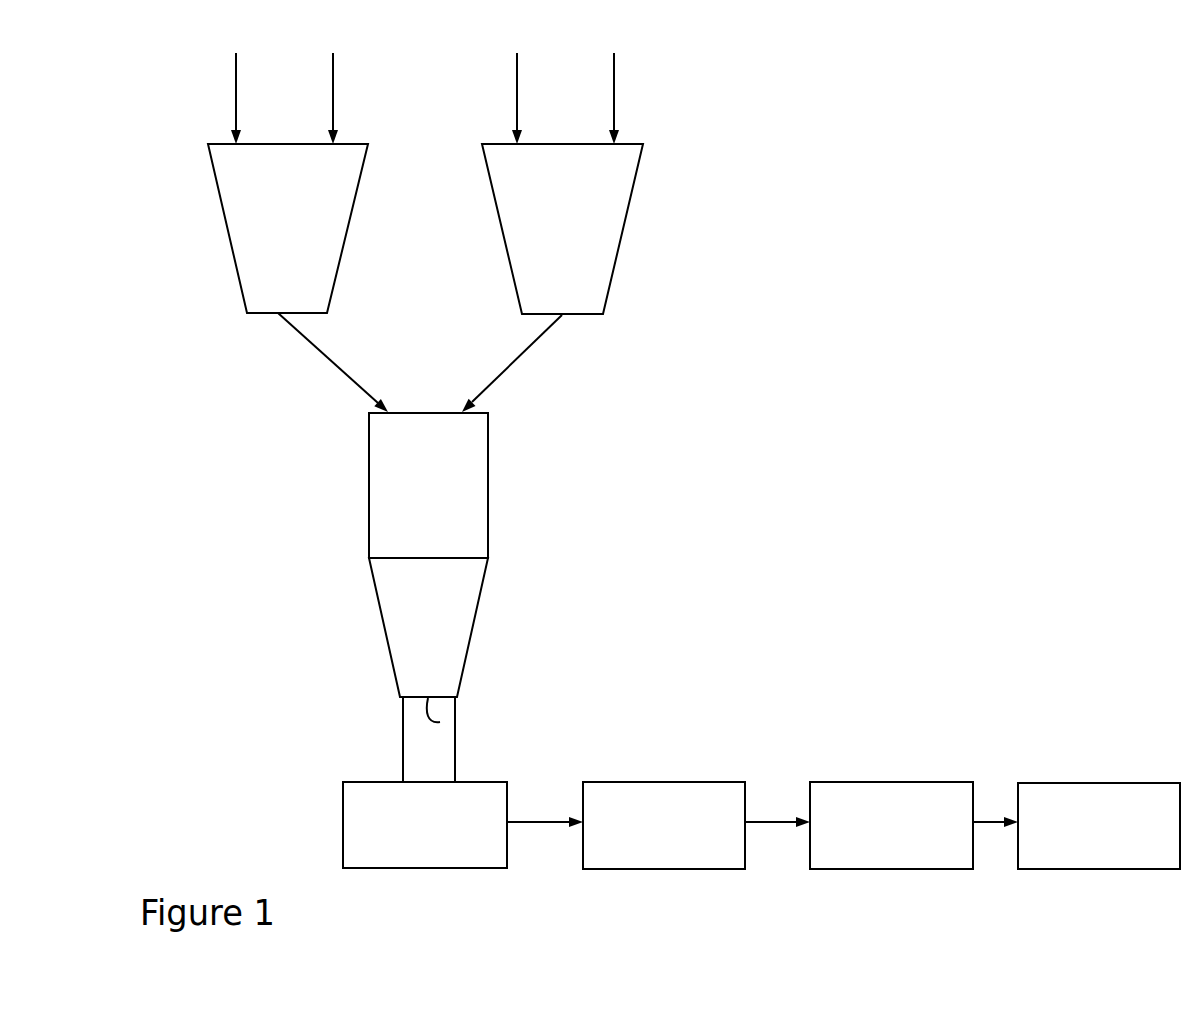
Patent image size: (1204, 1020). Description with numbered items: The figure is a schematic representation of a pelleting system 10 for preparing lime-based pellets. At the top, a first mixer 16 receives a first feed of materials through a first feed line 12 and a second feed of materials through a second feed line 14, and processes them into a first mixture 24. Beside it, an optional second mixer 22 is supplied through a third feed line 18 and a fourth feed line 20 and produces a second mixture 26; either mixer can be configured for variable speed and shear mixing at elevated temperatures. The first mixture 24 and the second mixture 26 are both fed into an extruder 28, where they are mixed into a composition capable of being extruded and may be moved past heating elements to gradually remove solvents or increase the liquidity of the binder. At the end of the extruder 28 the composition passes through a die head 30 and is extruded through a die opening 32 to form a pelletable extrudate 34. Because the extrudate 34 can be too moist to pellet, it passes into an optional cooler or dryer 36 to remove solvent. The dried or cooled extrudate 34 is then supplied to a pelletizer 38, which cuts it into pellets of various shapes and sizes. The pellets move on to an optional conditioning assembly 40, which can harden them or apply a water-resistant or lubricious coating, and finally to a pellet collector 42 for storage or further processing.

The pelleting system 10 is at (713, 71).
The first feed line 12 is at (228, 87).
The second feed line 14 is at (333, 87).
The first mixer 16 is at (288, 228).
The third feed line 18 is at (517, 87).
The fourth feed line 20 is at (614, 87).
The second mixer 22 is at (562, 229).
The first mixture 24 is at (333, 362).
The second mixture 26 is at (512, 363).
The extruder 28 is at (428, 485).
The die head 30 is at (428, 627).
The die opening 32 is at (440, 722).
The extrudate 34 is at (415, 755).
The dryer 36 is at (463, 825).
The pelletizer 38 is at (696, 825).
The conditioning assembly 40 is at (914, 825).
The pellet collector 42 is at (1099, 826).